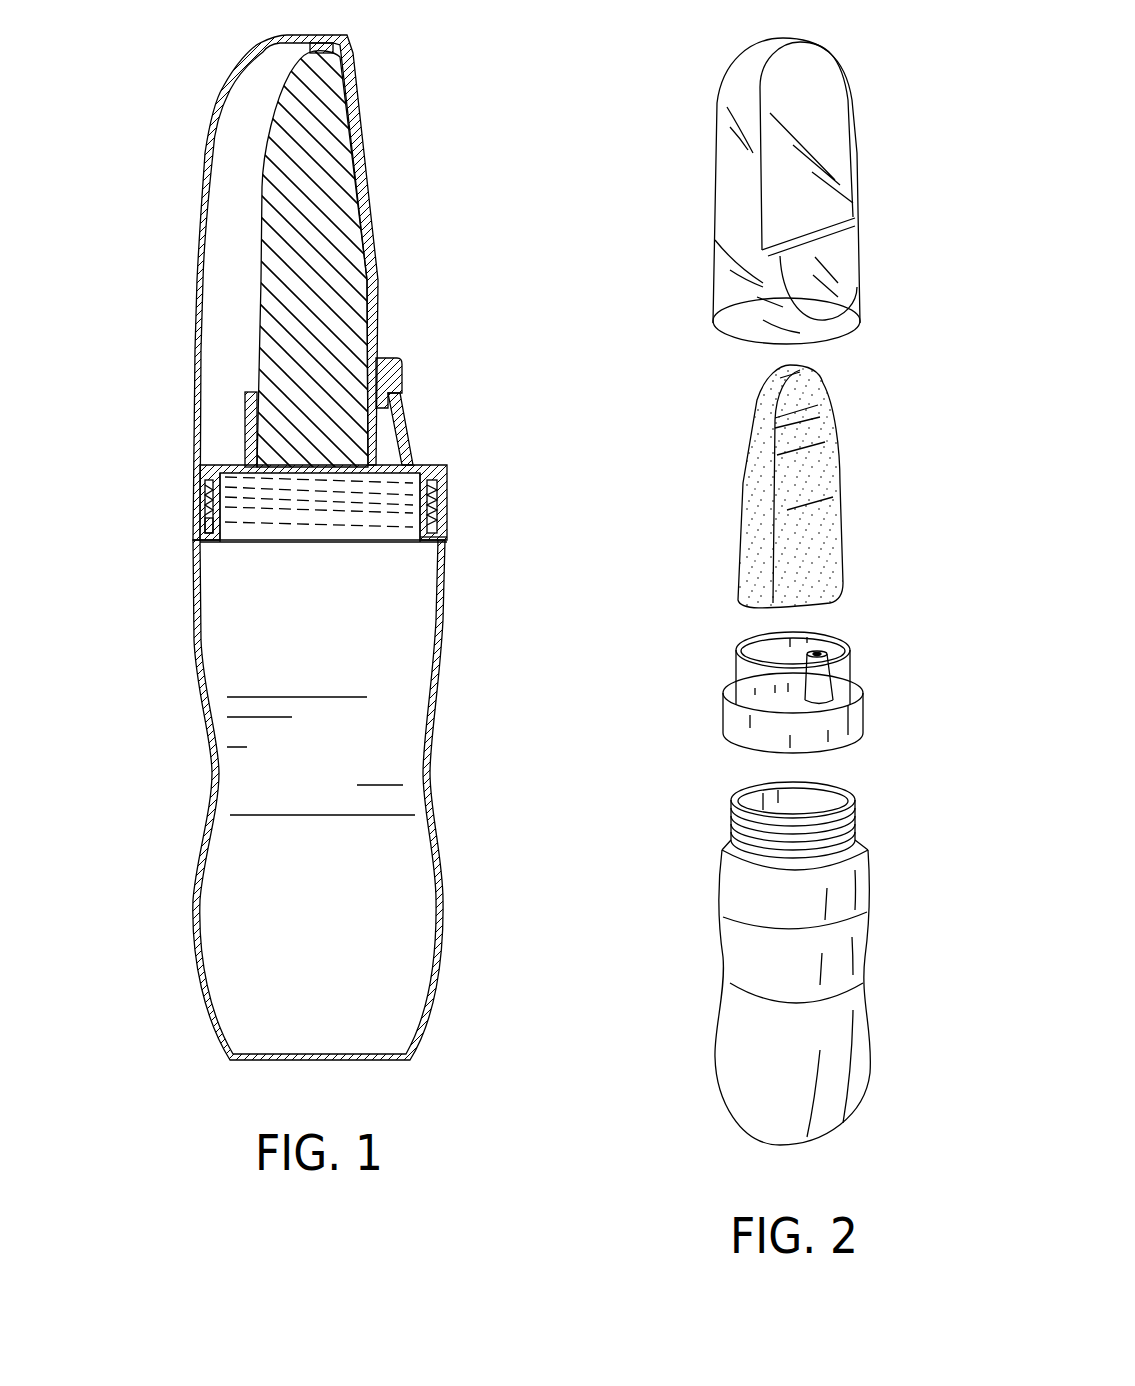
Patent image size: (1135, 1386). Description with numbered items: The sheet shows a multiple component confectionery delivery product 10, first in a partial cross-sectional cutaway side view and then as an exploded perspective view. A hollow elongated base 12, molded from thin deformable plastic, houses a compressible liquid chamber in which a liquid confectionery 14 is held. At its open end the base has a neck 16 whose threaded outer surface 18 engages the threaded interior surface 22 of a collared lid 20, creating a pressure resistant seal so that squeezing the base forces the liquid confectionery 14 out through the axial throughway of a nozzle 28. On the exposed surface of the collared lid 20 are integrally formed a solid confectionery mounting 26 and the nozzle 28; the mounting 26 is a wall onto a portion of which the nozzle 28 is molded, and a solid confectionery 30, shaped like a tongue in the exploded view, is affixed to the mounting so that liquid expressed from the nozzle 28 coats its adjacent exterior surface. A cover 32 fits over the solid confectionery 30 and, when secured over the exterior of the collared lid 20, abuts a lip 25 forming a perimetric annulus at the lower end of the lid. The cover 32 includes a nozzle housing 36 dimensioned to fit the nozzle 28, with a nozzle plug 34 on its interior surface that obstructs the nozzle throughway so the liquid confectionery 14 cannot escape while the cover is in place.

In FIG. 1, the multiple component confectionery delivery product 10 is at (120, 61).
In FIG. 1, the hollow elongated base 12 is at (415, 858).
In FIG. 2, the hollow elongated base 12 is at (840, 955).
In FIG. 1, the liquid confectionery 14 is at (335, 897).
In FIG. 1, the neck 16 is at (385, 540).
In FIG. 2, the neck 16 is at (853, 828).
In FIG. 1, the threaded outer surface 18 is at (205, 497).
In FIG. 2, the threaded outer surface 18 is at (735, 822).
In FIG. 1, the collared lid 20 is at (447, 500).
In FIG. 2, the collared lid 20 is at (850, 720).
In FIG. 1, the threaded interior surface 22 is at (205, 512).
In FIG. 1, the lip 25 is at (445, 537).
In FIG. 2, the solid confectionery mounting 26 is at (843, 631).
In FIG. 1, the nozzle 28 is at (388, 435).
In FIG. 2, the nozzle 28 is at (823, 671).
In FIG. 1, the solid confectionery 30 is at (335, 208).
In FIG. 2, the solid confectionery 30 is at (830, 525).
In FIG. 1, the cover 32 is at (195, 362).
In FIG. 2, the cover 32 is at (827, 150).
In FIG. 1, the nozzle plug 34 is at (402, 375).
In FIG. 2, the nozzle housing 36 is at (847, 265).